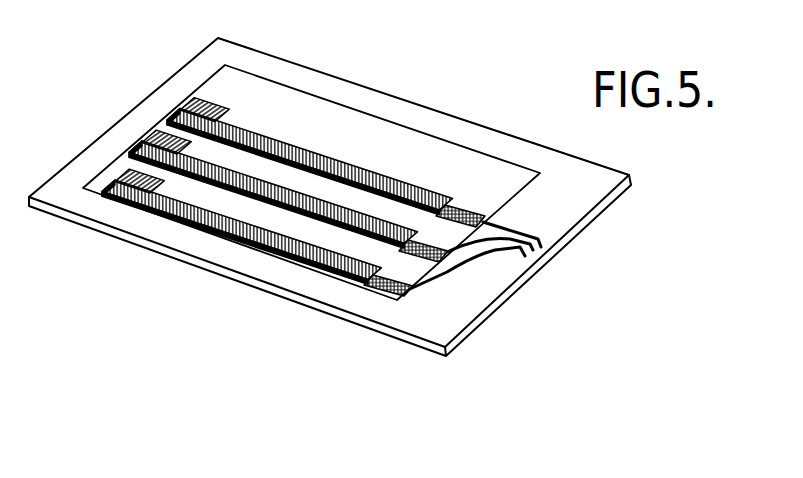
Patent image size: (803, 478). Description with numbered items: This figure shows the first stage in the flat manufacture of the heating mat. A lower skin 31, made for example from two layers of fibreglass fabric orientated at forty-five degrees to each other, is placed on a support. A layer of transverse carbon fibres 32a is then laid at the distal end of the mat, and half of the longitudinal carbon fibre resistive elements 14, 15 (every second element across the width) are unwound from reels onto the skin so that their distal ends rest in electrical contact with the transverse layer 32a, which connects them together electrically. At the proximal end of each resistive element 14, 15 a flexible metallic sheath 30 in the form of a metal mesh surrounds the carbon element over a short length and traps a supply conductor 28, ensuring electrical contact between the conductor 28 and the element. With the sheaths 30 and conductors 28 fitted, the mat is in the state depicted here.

The resistive element 14 is at (243, 177).
The resistive element 15 is at (242, 230).
The supply conductor 28 is at (540, 244).
The sheath 30 is at (393, 276).
The lower skin 31 is at (348, 133).
The carbon fibre conducting layer 32a is at (163, 127).